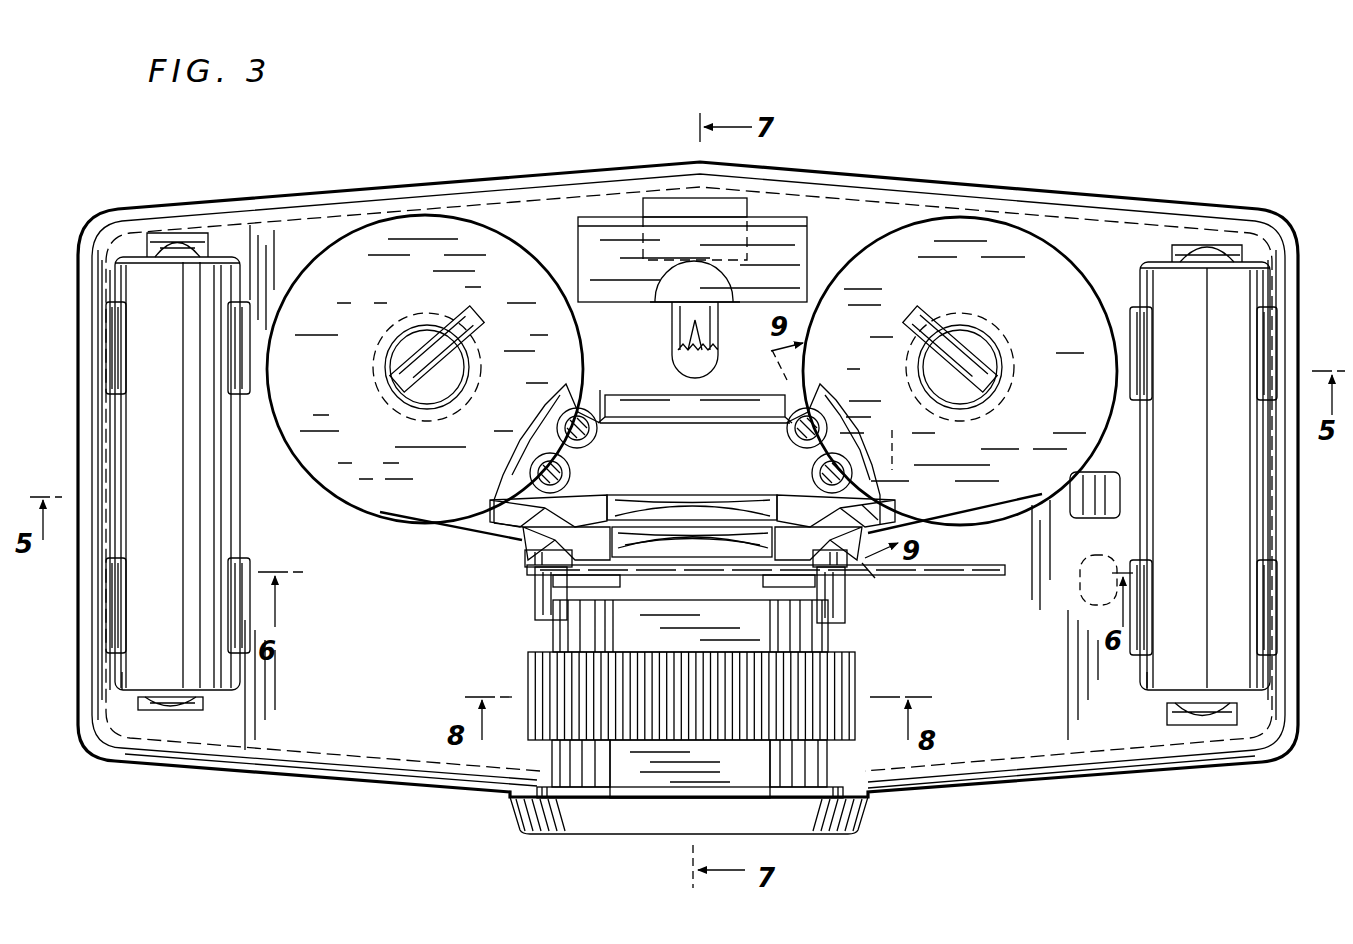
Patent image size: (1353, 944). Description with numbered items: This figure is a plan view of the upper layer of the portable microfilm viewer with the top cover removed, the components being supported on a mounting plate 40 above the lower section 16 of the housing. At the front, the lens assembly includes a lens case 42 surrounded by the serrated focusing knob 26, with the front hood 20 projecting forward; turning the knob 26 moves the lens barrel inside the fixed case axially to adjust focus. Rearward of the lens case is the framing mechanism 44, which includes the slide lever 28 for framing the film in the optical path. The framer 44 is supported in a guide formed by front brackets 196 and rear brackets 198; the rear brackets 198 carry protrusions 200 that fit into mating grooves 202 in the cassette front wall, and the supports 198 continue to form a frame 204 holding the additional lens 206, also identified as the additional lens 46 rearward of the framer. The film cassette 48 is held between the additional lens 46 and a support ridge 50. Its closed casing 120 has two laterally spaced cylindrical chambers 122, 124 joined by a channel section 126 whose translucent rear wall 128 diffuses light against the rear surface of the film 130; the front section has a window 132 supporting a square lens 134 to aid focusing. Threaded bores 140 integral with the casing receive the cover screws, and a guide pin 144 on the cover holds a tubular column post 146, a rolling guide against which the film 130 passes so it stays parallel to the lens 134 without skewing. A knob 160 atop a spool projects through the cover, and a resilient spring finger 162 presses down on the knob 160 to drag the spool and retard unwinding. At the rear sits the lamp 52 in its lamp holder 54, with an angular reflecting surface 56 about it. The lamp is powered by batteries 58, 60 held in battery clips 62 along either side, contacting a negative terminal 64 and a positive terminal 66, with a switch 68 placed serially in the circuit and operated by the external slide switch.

The lower section 16 is at (1058, 196).
The front hood 20 is at (832, 832).
The serrated knob 26 is at (527, 663).
The slide lever 28 is at (940, 575).
The mounting plate 40 is at (968, 680).
The lens case 42 is at (836, 643).
The framing mechanism 44 is at (530, 600).
The additional lens 46 is at (520, 556).
The film cassette 48 is at (390, 517).
The support ridge 50 is at (628, 392).
The lamp 52 is at (680, 340).
The lamp holder 54 is at (752, 207).
The angular reflecting surface 56 is at (808, 240).
The battery 58 is at (1150, 697).
The battery 60 is at (238, 675).
The battery clips 62 is at (248, 400).
The negative terminal 64 is at (205, 700).
The positive terminal 66 is at (210, 240).
The switch 68 is at (1062, 520).
The closed casing 120 is at (505, 530).
The cylindrical chamber 122 is at (1075, 395).
The cylindrical chamber 124 is at (362, 290).
The channel section 126 is at (687, 454).
The rear wall 128 is at (717, 417).
The film 130 is at (733, 492).
The window 132 is at (617, 494).
The square lens 134 is at (672, 510).
The threaded bores 140 is at (787, 431).
The guide pin 144 is at (840, 470).
The tubular column post 146 is at (855, 468).
The knob 160 is at (985, 348).
The resilient spring finger 162 is at (940, 310).
The front brackets 196 is at (848, 598).
The rear brackets 198 is at (858, 567).
The protrusions 200 is at (790, 520).
The grooves 202 is at (875, 512).
The frame 204 is at (772, 565).
The additional lens 206 is at (700, 565).